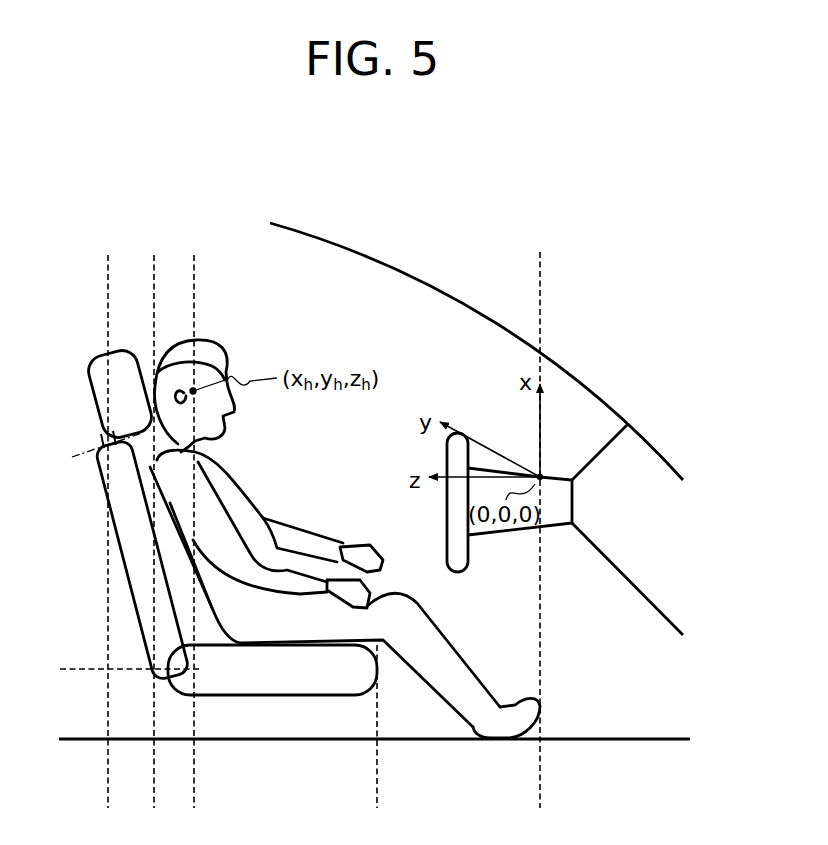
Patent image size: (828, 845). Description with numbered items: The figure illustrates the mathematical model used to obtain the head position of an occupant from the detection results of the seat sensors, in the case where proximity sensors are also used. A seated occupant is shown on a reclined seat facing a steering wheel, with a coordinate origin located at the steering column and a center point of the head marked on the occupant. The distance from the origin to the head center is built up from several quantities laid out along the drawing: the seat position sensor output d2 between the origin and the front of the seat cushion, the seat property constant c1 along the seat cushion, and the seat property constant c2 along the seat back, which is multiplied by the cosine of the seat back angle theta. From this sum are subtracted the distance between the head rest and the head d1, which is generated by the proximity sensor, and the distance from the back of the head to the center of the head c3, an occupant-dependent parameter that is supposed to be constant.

The distance between the head rest and the head d1 is at (154, 290).
The distance from the back of the head to the center of the head c3 is at (194, 290).
The seat property constant c2 is at (178, 660).
The seat property constant c1 is at (375, 670).
The seat position sensor output value d2 is at (540, 773).